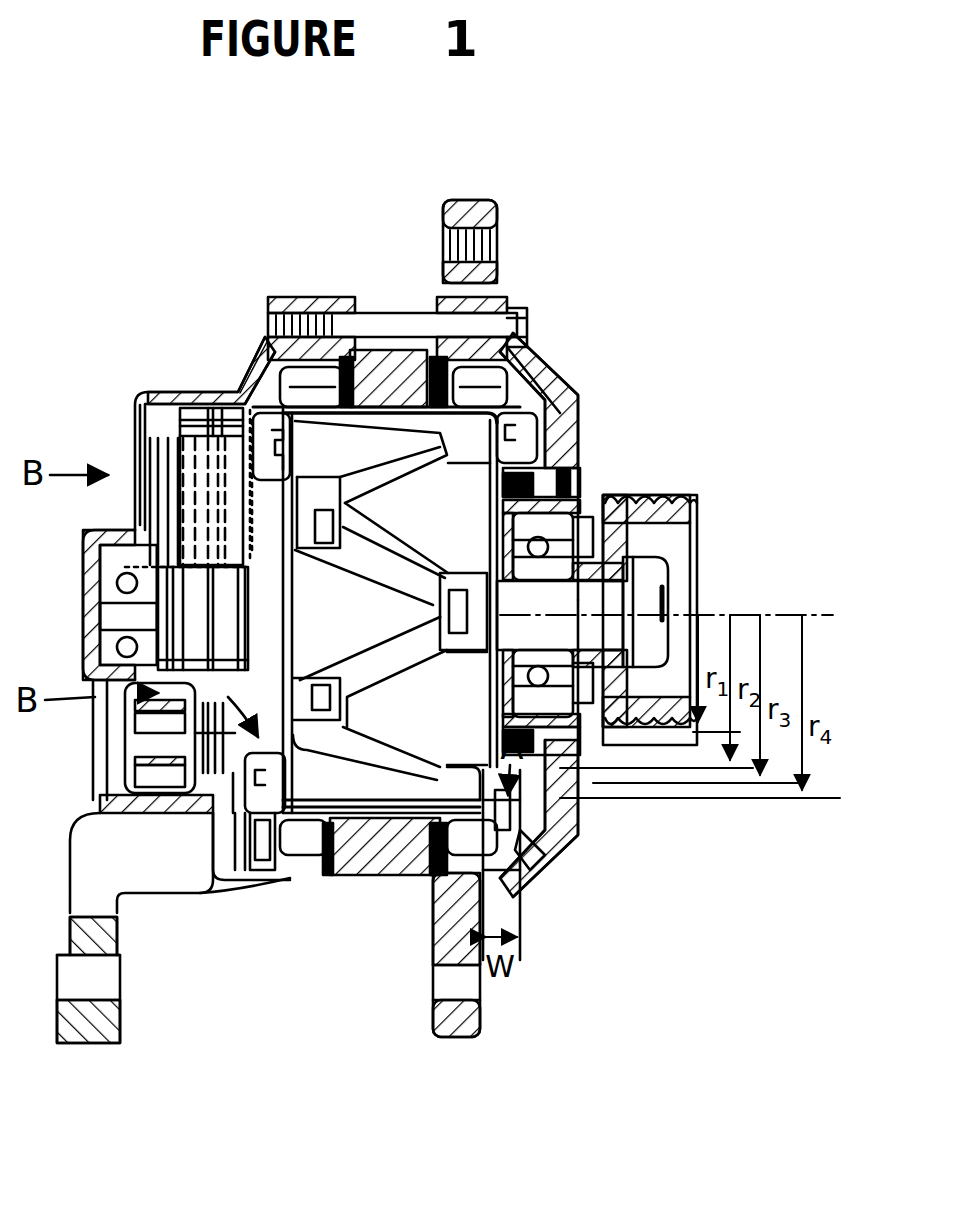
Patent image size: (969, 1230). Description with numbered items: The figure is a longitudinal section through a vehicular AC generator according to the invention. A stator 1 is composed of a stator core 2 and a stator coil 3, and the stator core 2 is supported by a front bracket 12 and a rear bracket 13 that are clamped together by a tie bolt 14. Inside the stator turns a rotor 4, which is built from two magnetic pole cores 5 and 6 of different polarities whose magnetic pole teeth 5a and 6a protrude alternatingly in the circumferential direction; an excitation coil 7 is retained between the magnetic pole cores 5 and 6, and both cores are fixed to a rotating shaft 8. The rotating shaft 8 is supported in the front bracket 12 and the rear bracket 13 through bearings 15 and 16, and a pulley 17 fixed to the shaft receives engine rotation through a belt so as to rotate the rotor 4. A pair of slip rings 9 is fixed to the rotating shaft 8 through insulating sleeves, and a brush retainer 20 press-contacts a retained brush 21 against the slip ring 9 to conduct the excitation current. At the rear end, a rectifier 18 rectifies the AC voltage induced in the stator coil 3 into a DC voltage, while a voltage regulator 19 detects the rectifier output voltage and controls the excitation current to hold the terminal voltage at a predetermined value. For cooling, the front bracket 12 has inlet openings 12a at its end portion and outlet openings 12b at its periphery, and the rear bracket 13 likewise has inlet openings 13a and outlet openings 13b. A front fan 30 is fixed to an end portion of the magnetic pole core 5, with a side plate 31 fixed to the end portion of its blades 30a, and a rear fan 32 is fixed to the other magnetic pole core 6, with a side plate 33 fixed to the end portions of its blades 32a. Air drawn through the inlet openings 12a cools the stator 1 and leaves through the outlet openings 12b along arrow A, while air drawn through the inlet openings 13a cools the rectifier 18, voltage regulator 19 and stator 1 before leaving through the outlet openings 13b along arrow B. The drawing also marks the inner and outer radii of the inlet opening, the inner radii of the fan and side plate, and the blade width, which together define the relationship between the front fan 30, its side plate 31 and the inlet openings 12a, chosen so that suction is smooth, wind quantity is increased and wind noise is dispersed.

The stator 1 is at (321, 240).
The stator core 2 is at (370, 383).
The stator coil 3 is at (318, 372).
The rotor 4 is at (425, 953).
The magnetic pole core 5 is at (437, 832).
The magnetic pole teeth 5a is at (418, 762).
The magnetic pole core 6 is at (302, 790).
The magnetic pole teeth 6a is at (345, 800).
The excitation coil 7 is at (376, 680).
The rotating shaft 8 is at (593, 622).
The slip rings 9 is at (228, 590).
The front bracket 12 is at (570, 410).
The inlet openings 12a is at (548, 470).
The outlet openings 12b is at (550, 380).
The rear bracket 13 is at (213, 396).
The inlet openings 13a is at (135, 480).
The outlet openings 13b is at (252, 375).
The tie bolt 14 is at (517, 310).
The bearing 15 is at (545, 530).
The bearing 16 is at (85, 575).
The pulley 17 is at (655, 730).
The rectifier 18 is at (188, 732).
The voltage regulator 19 is at (150, 470).
The brush retainer 20 is at (225, 465).
The brush 21 is at (130, 413).
The front fan 30 is at (517, 887).
The blades 30a is at (530, 855).
The side plate 31 is at (533, 837).
The rear fan 32 is at (262, 872).
The blades 32a is at (248, 880).
The side plate 33 is at (238, 872).